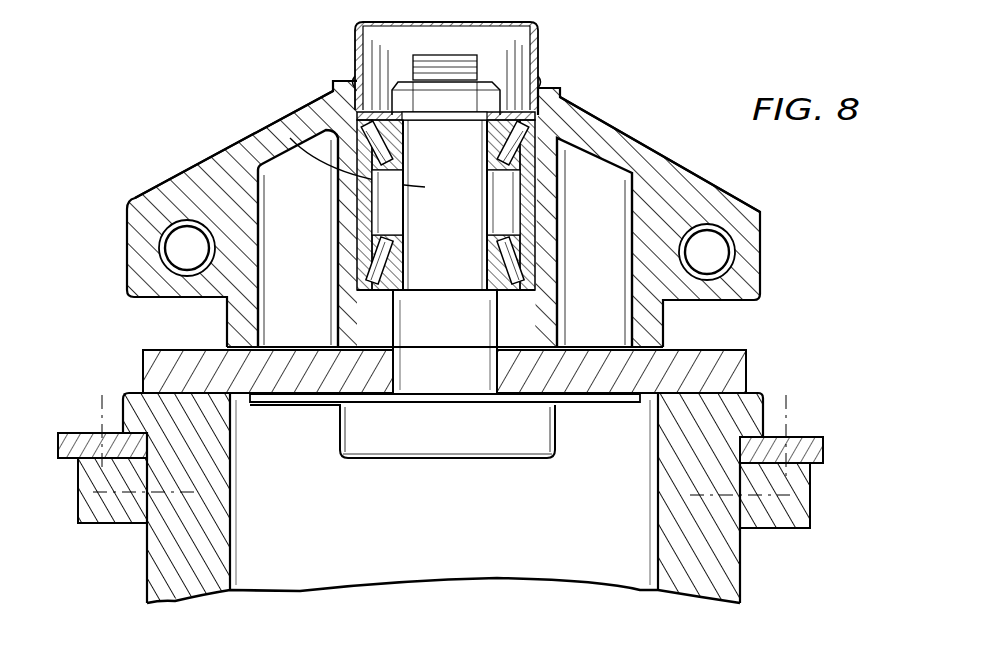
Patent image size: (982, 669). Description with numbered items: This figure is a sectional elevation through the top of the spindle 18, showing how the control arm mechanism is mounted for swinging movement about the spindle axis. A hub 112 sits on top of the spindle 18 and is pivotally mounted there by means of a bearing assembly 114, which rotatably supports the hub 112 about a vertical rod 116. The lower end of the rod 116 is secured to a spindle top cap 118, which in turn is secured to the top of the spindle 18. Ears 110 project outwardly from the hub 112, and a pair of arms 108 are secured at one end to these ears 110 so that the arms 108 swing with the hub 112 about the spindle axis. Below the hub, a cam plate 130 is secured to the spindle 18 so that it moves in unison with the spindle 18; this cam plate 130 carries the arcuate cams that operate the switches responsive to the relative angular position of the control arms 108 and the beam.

The spindle 18 is at (757, 575).
The arms 108 is at (127, 262).
The ears 110 is at (152, 208).
The hub 112 is at (607, 140).
The bearing assembly 114 is at (362, 156).
The vertical rod 116 is at (265, 122).
The spindle top cap 118 is at (760, 361).
The cam plate 130 is at (838, 413).